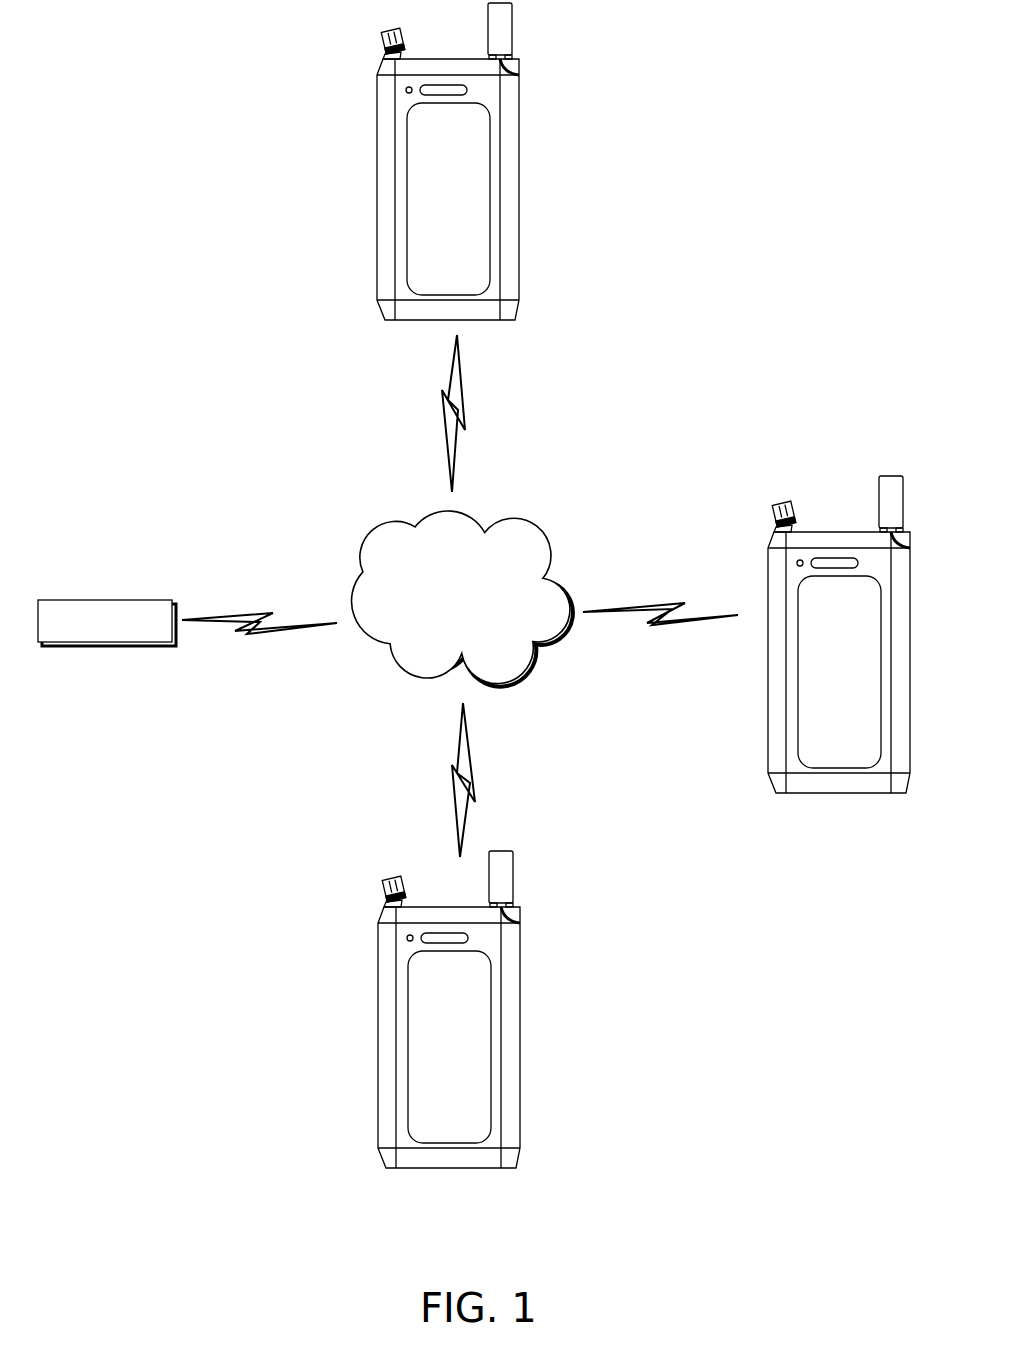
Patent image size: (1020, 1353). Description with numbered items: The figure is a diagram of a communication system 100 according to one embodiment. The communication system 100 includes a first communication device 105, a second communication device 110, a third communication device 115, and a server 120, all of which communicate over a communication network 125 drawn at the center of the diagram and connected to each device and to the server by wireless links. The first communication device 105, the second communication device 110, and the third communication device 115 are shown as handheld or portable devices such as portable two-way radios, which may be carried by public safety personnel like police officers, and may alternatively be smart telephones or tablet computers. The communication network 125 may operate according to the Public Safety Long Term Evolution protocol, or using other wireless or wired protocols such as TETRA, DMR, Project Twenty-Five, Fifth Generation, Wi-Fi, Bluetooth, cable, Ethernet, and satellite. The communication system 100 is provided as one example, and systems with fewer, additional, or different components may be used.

The communication system 100 is at (157, 32).
The first communication device 105 is at (415, 1080).
The second communication device 110 is at (856, 532).
The third communication device 115 is at (428, 200).
The server 120 is at (108, 645).
The communication network 125 is at (368, 546).